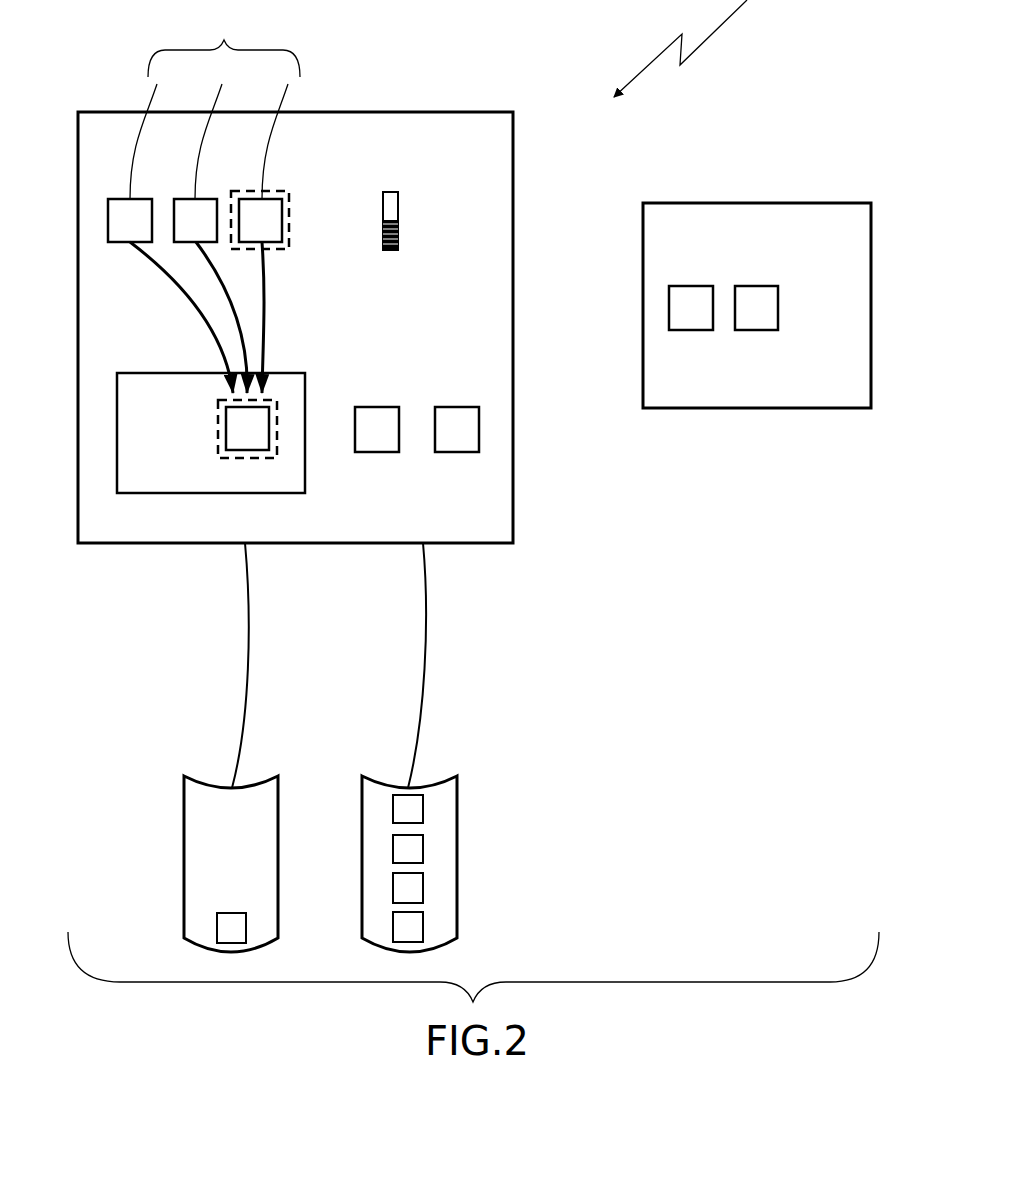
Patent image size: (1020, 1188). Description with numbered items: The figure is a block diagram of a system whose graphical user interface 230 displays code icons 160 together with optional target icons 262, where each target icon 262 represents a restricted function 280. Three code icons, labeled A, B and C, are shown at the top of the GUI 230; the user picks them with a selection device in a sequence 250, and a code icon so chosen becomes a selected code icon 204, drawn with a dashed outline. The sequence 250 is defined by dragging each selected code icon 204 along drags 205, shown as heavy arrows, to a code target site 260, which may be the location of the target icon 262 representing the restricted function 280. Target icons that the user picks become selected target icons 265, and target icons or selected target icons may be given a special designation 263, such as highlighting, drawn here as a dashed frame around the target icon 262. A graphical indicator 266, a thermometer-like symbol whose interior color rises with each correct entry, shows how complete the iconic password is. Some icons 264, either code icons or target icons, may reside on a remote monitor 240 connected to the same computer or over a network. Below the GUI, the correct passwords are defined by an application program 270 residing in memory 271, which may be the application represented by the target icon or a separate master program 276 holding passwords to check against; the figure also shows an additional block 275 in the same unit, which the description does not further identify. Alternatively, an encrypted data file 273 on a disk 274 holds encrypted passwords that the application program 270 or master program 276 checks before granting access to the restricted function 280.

The GUI 230 is at (426, 106).
The sequence 250 is at (215, 105).
The code icons 160 is at (208, 201).
The selected code icons 204 is at (290, 210).
The graphical indicator 266 is at (398, 218).
The drags 205 is at (267, 290).
The code target site 260 is at (306, 390).
The special designation 263 is at (240, 458).
The target icon 262 is at (254, 450).
The selected target icons 265 is at (458, 407).
The remote monitor 240 is at (783, 414).
The icons 264 is at (790, 280).
The disk 274 is at (184, 818).
The encrypted data file 273 is at (222, 913).
The master program 276 is at (345, 790).
The application program 270 is at (423, 810).
The memory 271 is at (423, 850).
The restricted function 280 is at (423, 890).
The right handle button 275 is at (423, 923).